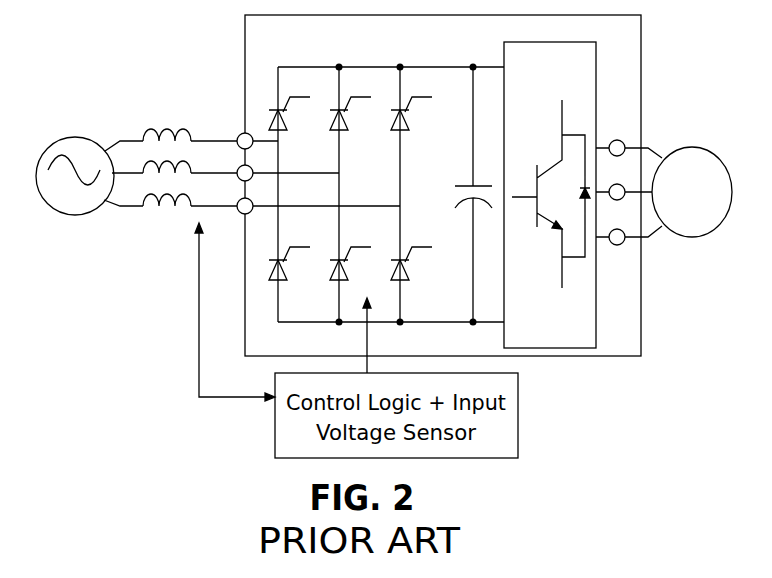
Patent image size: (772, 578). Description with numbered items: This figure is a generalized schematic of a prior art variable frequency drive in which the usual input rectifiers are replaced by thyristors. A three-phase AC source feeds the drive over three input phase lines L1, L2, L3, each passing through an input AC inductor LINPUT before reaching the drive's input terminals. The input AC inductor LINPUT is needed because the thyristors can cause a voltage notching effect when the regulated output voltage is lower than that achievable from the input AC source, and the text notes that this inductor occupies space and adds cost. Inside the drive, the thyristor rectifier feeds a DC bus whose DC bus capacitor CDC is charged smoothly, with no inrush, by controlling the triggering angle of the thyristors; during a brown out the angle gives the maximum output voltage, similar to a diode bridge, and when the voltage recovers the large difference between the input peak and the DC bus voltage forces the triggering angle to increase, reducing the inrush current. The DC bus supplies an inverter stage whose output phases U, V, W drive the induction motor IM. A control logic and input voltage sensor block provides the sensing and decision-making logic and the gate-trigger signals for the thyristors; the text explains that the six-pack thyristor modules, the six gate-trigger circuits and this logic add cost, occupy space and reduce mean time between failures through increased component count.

The input phase line L1 is at (214, 132).
The input phase line L2 is at (214, 162).
The input phase line L3 is at (214, 195).
The input AC inductor LINPUT is at (162, 151).
The DC bus capacitor CDC is at (461, 194).
The output phase U terminal U is at (629, 141).
The output phase V terminal V is at (624, 184).
The output phase W terminal W is at (629, 227).
The induction motor IM is at (692, 192).